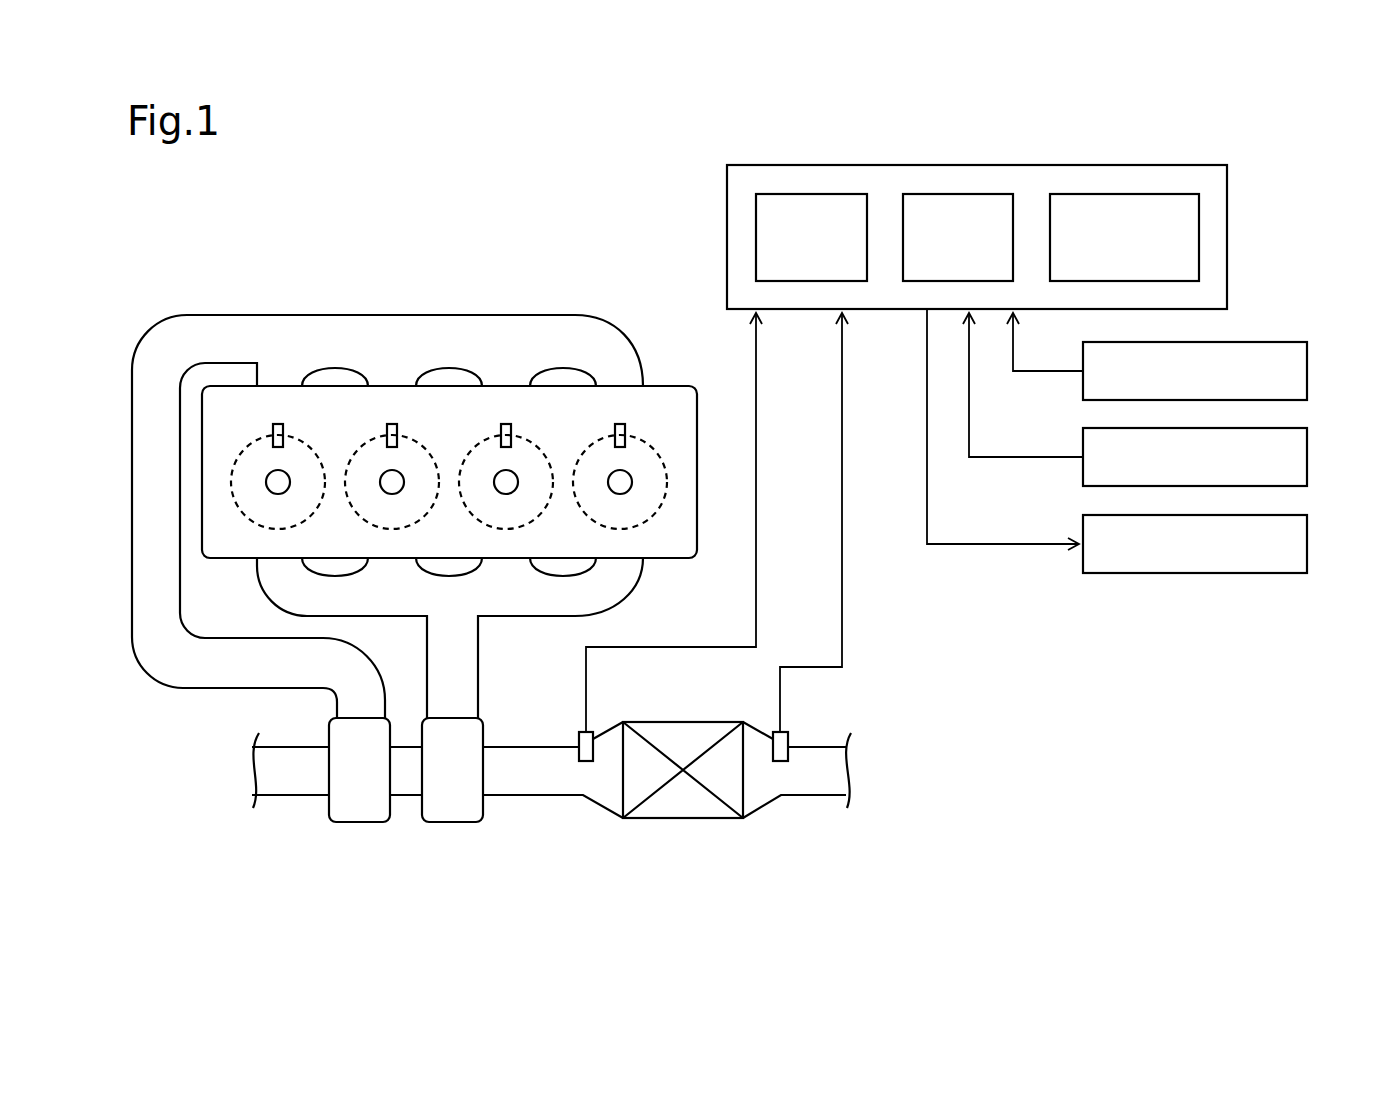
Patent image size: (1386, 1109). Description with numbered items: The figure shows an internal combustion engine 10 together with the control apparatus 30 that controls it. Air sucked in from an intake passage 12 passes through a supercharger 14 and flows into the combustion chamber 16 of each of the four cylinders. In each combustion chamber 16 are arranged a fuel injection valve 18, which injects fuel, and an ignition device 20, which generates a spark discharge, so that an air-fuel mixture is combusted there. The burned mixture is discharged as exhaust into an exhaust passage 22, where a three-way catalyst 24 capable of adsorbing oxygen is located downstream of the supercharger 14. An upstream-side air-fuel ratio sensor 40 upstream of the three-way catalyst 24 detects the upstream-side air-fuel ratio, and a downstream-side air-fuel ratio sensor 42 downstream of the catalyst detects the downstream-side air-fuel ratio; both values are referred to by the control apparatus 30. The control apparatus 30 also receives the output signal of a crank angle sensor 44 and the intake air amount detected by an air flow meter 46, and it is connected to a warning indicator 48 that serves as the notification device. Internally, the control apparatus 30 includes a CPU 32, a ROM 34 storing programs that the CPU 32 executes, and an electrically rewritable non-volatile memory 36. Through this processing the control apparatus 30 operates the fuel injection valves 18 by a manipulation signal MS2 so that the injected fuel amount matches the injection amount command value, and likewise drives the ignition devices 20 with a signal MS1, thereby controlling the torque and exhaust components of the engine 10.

The internal combustion engine 10 is at (495, 263).
The intake passage 12 is at (284, 790).
The supercharger 14 is at (404, 818).
The combustion chamber 16 is at (238, 472).
The fuel injection valve 18 is at (279, 424).
The ignition device 20 is at (291, 484).
The exhaust passage 22 is at (625, 598).
The three-way catalyst 24 is at (680, 803).
The control apparatus 30 is at (1207, 165).
The CPU 32 is at (811, 194).
The ROM 34 is at (959, 194).
The non-volatile memory 36 is at (1125, 194).
The upstream-side air-fuel ratio sensor 40 is at (580, 731).
The downstream-side air-fuel ratio sensor 42 is at (789, 731).
The crank angle sensor 44 is at (1308, 371).
The air flow meter 46 is at (1308, 457).
The warning indicator 48 is at (1308, 544).
The operation signal for in-cylinder injection valve MS1 is at (635, 476).
The manipulation signal MS2 is at (627, 426).